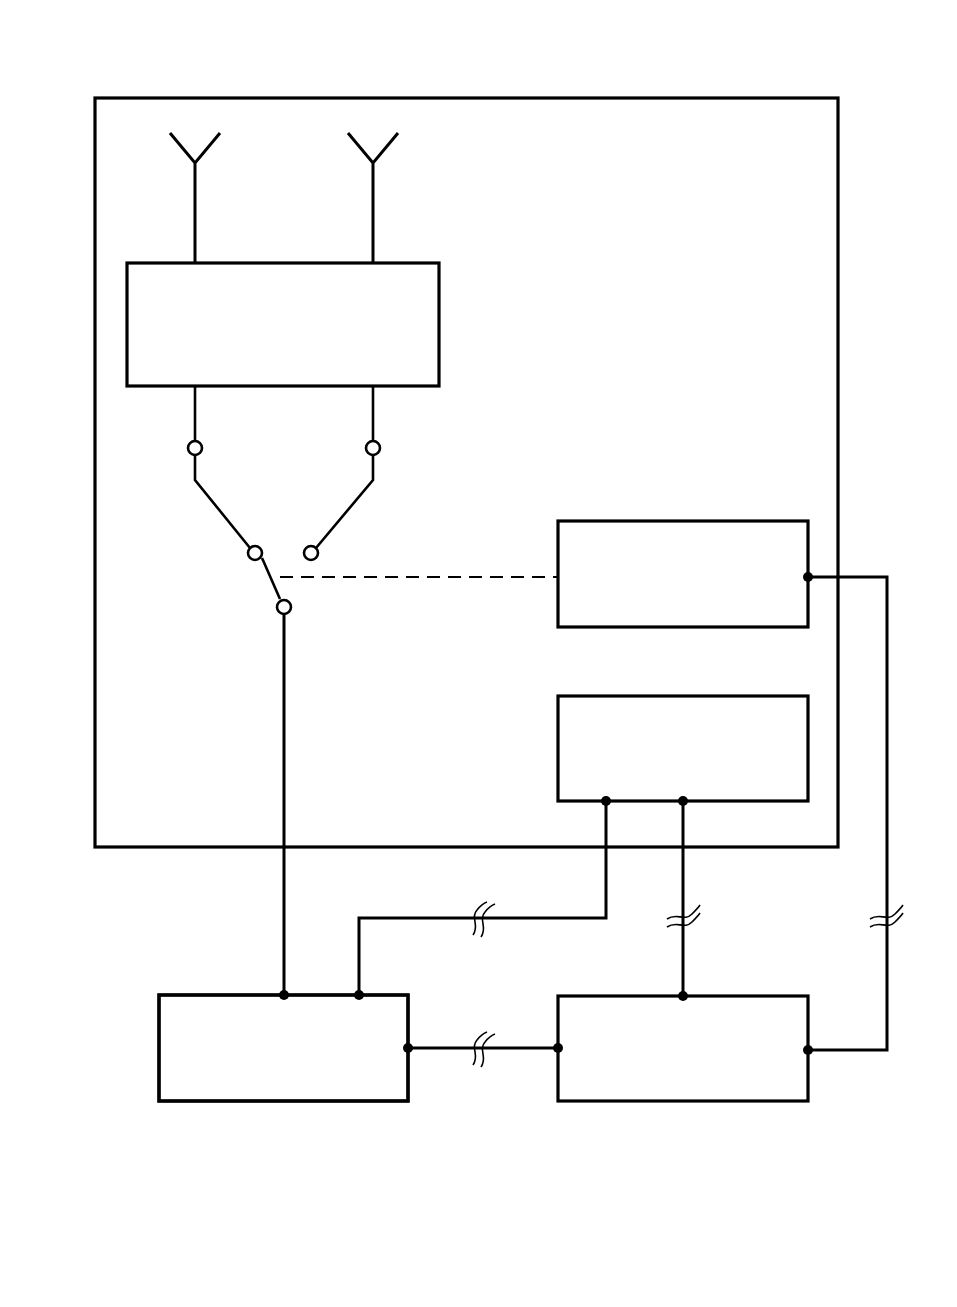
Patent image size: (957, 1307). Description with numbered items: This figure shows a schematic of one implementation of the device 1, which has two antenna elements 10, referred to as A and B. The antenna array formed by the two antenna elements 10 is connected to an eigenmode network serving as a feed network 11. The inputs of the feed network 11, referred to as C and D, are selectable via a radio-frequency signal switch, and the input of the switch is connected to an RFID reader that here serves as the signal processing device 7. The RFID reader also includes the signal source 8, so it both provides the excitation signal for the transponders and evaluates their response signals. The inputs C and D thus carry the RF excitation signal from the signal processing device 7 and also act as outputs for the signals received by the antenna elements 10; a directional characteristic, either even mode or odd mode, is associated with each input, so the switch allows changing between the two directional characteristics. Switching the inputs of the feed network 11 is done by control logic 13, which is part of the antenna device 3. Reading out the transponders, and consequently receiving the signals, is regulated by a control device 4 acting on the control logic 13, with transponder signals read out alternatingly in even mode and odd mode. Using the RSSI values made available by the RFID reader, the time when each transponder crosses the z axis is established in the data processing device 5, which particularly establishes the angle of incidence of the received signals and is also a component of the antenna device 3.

The device 1 is at (83, 492).
The antenna device 3 is at (462, 97).
The control device 4 is at (692, 1064).
The data processing device 5 is at (692, 762).
The signal processing device 7 is at (277, 1062).
The signal source 8 is at (307, 1062).
The antenna element 10 is at (196, 206).
The feed network 11 is at (297, 338).
The control logic 13 is at (698, 587).